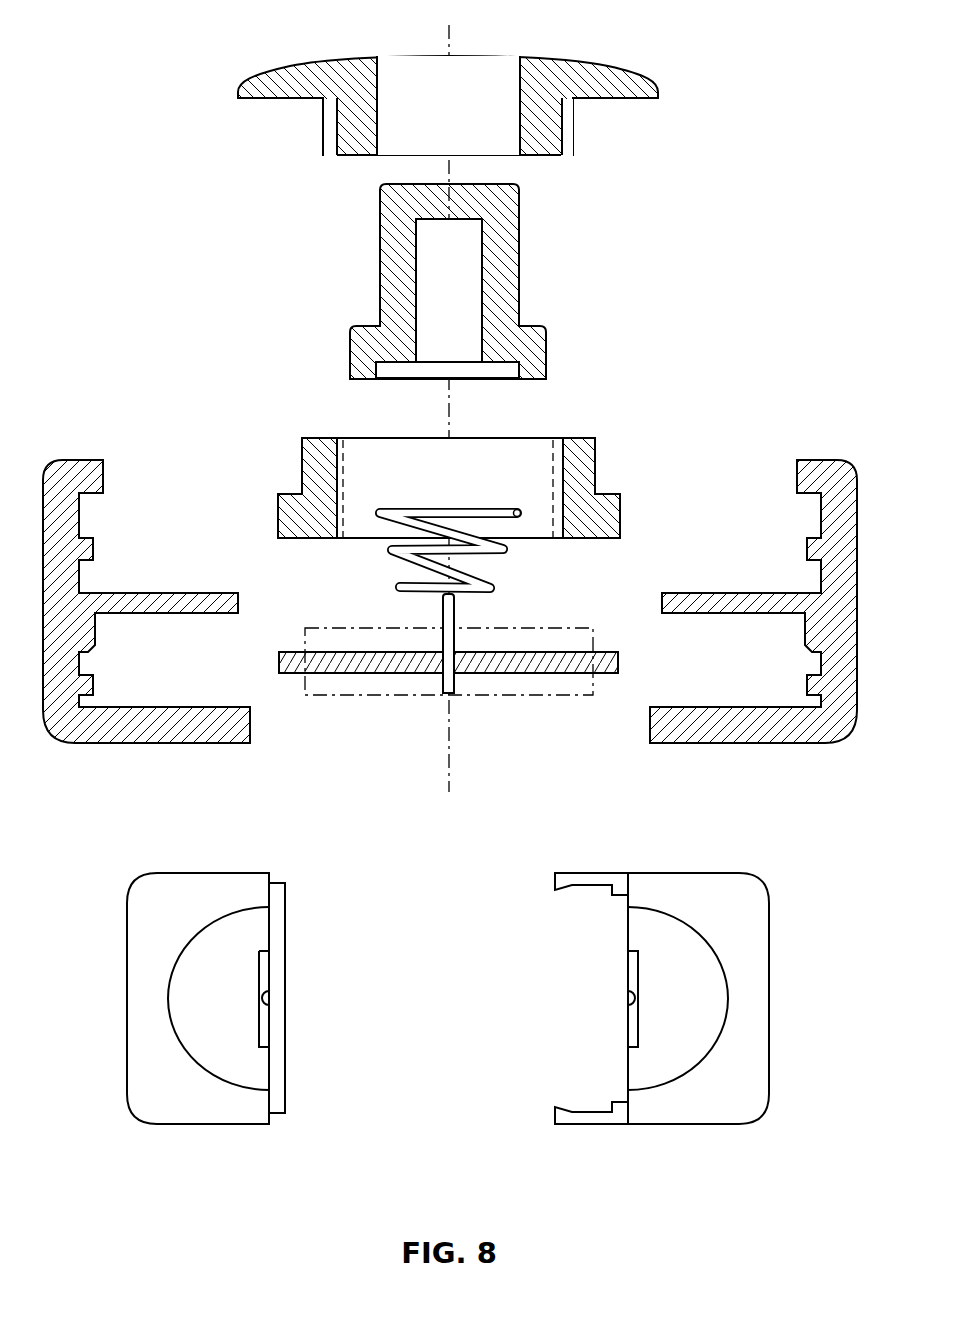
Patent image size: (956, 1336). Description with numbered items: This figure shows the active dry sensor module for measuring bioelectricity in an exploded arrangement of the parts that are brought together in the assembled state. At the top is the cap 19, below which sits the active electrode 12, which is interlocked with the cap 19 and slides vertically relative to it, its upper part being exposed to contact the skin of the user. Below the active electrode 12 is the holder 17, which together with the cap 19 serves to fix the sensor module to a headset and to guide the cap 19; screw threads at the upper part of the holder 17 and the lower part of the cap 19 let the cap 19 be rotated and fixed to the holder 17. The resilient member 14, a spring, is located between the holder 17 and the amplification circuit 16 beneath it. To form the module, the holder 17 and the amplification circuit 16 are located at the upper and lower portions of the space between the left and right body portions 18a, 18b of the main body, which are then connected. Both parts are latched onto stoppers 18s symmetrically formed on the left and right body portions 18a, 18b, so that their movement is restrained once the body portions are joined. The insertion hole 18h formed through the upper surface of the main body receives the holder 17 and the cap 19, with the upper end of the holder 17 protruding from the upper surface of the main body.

The cap 19 is at (577, 55).
The active electrode 12 is at (520, 250).
The holder 17 is at (577, 438).
The resilient member 14 is at (490, 589).
The amplification circuit 16 is at (618, 662).
The stoppers 18s is at (88, 548).
The left body portion 18a is at (190, 1113).
The right body portion 18b is at (671, 1113).
The insertion hole 18h is at (252, 1062).